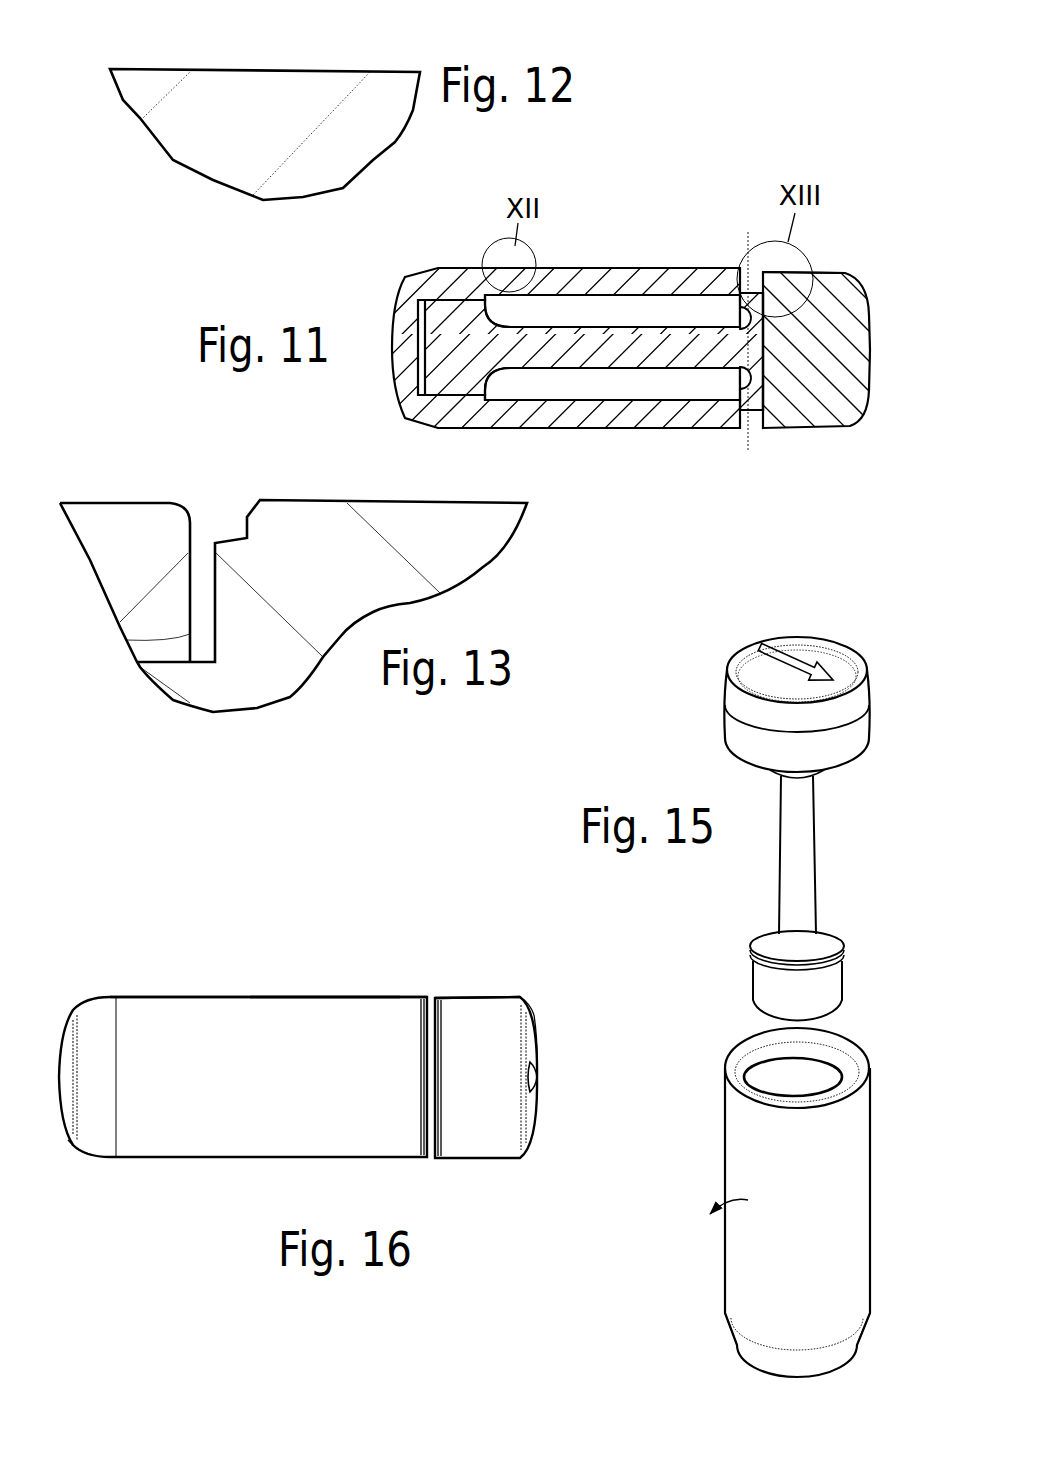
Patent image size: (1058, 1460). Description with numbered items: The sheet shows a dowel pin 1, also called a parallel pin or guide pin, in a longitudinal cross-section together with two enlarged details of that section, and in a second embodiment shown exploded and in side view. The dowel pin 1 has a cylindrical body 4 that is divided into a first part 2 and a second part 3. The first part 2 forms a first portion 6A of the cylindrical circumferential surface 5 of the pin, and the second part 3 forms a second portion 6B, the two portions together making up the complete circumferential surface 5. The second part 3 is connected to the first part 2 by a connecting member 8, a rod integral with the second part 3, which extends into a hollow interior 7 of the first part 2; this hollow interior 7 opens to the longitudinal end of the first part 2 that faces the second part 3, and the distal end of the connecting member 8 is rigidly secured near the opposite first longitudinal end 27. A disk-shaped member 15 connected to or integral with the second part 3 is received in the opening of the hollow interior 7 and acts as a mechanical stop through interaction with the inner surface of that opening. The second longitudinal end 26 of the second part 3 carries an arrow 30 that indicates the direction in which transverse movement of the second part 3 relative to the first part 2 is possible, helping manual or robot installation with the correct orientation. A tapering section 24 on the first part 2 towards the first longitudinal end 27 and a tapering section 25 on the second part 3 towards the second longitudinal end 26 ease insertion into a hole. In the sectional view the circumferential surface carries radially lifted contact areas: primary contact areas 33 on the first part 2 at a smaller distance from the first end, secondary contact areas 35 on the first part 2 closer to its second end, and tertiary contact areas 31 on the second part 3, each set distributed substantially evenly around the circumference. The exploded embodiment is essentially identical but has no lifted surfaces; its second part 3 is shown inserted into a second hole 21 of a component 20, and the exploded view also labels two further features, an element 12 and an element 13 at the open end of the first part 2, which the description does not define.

In FIG. 11, the dowel pin 1 is at (643, 177).
In FIG. 15, the dowel pin 1 is at (691, 951).
In FIG. 16, the dowel pin 1 is at (244, 1215).
In FIG. 11, the first part 2 is at (590, 446).
In FIG. 16, the first part 2 is at (183, 984).
In FIG. 11, the second part 3 is at (826, 257).
In FIG. 15, the second part 3 is at (867, 789).
In FIG. 16, the second part 3 is at (469, 1178).
In FIG. 15, the cylindrical body 4 is at (916, 1158).
In FIG. 11, the circumferential surface 5 is at (621, 248).
In FIG. 16, the circumferential surface 5 is at (352, 941).
In FIG. 11, the first portion of the circumferential surface 6A is at (646, 268).
In FIG. 16, the first portion of the circumferential surface 6A is at (298, 993).
In FIG. 11, the second portion of the circumferential surface 6B is at (782, 272).
In FIG. 16, the second portion of the circumferential surface 6B is at (455, 995).
In FIG. 11, the hollow interior 7 is at (594, 312).
In FIG. 15, the hollow interior 7 is at (794, 1073).
In FIG. 11, the connecting member 8 is at (607, 345).
In FIG. 15, the connecting member 8 is at (800, 853).
In FIG. 15, the opening 12 is at (838, 1062).
In FIG. 15, the inner surface 13 is at (762, 1088).
In FIG. 11, the disk-shaped member 15 is at (762, 394).
In FIG. 15, the disk-shaped member 15 is at (755, 768).
In FIG. 11, the component 20 is at (469, 337).
In FIG. 15, the component 20 is at (823, 1000).
In FIG. 15, the second hole 21 is at (838, 958).
In FIG. 15, the tapering section 24 is at (735, 1347).
In FIG. 16, the tapering section 24 is at (93, 1152).
In FIG. 15, the tapering section 25 is at (863, 687).
In FIG. 16, the tapering section 25 is at (510, 1003).
In FIG. 15, the second longitudinal end 26 is at (803, 632).
In FIG. 16, the second longitudinal end 26 is at (538, 1033).
In FIG. 16, the first longitudinal end 27 is at (63, 1040).
In FIG. 15, the arrow 30 is at (787, 647).
In FIG. 16, the arrow 30 is at (536, 1077).
In FIG. 13, the tertiary radially lifted contact areas 31 is at (373, 500).
In FIG. 12, the primary radially lifted contact areas 33 is at (273, 70).
In FIG. 13, the secondary radially lifted contact areas 35 is at (120, 500).